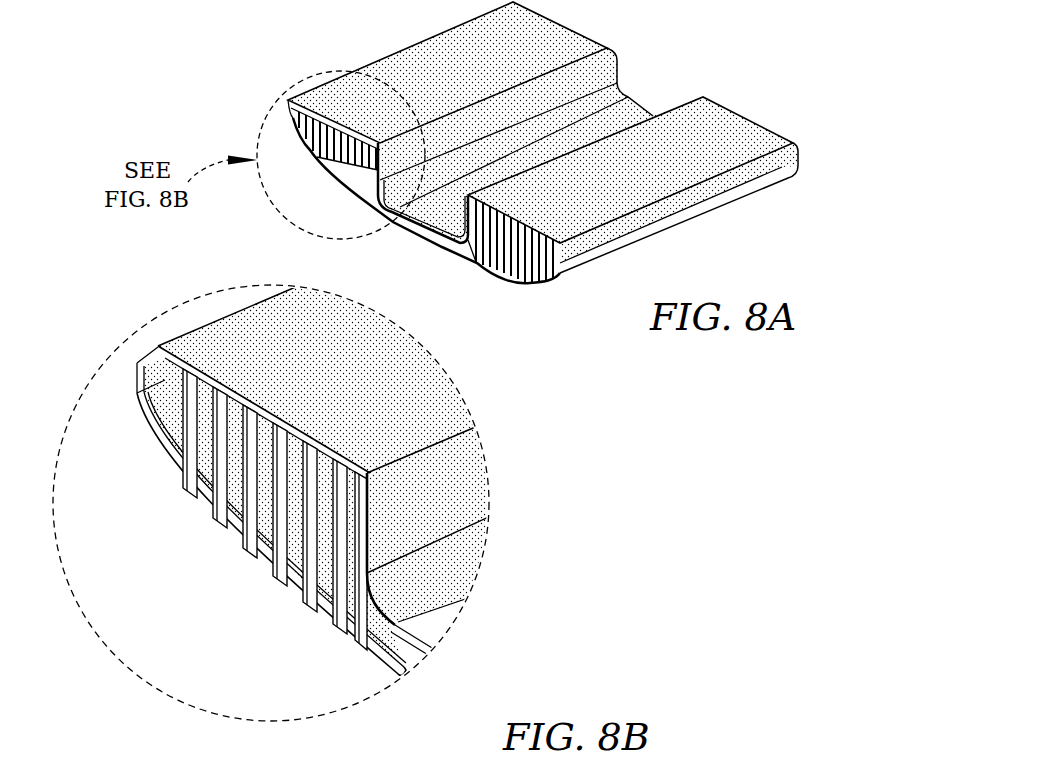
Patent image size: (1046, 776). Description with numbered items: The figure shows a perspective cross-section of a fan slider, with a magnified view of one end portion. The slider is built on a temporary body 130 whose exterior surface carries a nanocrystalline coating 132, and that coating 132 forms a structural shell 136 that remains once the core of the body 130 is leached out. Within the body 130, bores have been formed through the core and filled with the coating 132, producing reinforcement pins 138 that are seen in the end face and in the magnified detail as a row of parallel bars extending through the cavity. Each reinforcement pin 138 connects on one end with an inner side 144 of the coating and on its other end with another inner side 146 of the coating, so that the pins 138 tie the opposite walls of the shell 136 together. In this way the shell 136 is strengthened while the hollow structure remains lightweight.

In FIG. 8A, the temporary body 130 is at (432, 249).
In FIG. 8B, the temporary body 130 is at (410, 653).
In FIG. 8A, the coating 132 is at (754, 138).
In FIG. 8B, the coating 132 is at (421, 396).
In FIG. 8A, the structural shell 136 is at (384, 46).
In FIG. 8B, the structural shell 136 is at (191, 564).
In FIG. 8A, the reinforcement pins 138 is at (426, 197).
In FIG. 8B, the reinforcement pins 138 is at (209, 434).
In FIG. 8B, the inner side 144 is at (387, 650).
In FIG. 8B, the inner side 146 is at (176, 385).